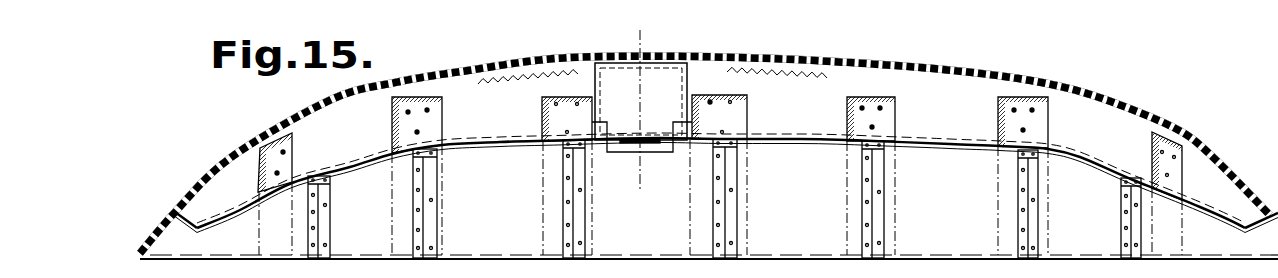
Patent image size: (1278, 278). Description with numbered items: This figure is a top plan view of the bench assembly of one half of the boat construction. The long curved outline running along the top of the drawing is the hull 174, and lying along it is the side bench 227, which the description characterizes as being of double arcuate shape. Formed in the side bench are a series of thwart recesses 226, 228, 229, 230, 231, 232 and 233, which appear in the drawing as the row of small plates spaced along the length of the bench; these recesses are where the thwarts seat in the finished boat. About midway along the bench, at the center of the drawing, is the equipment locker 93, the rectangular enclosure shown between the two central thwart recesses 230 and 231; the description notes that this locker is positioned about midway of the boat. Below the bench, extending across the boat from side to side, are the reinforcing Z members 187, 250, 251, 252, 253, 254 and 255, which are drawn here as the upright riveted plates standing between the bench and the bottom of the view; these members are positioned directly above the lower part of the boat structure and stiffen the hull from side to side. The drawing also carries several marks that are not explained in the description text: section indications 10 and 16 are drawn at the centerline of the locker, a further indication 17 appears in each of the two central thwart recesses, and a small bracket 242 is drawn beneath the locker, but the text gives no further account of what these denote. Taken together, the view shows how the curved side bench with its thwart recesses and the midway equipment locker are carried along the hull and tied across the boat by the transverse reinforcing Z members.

The section line 10 is at (652, 45).
The section line 16 is at (652, 172).
The section line 17 is at (575, 109).
The equipment locker 93 is at (667, 88).
The hull 174 is at (1033, 76).
The reinforcing Z member 187 is at (329, 225).
The thwart recess 226 is at (1049, 146).
The side bench 227 is at (1094, 113).
The thwart recess 228 is at (1183, 157).
The thwart recess 229 is at (896, 113).
The thwart recess 230 is at (749, 112).
The thwart recess 231 is at (542, 101).
The thwart recess 232 is at (400, 97).
The thwart recess 233 is at (295, 144).
The mounting bracket 242 is at (659, 145).
The reinforcing Z member 250 is at (1141, 237).
The reinforcing Z member 251 is at (1039, 222).
The reinforcing Z member 252 is at (884, 215).
The reinforcing Z member 253 is at (576, 233).
The reinforcing Z member 254 is at (438, 228).
The reinforcing Z member 255 is at (745, 222).